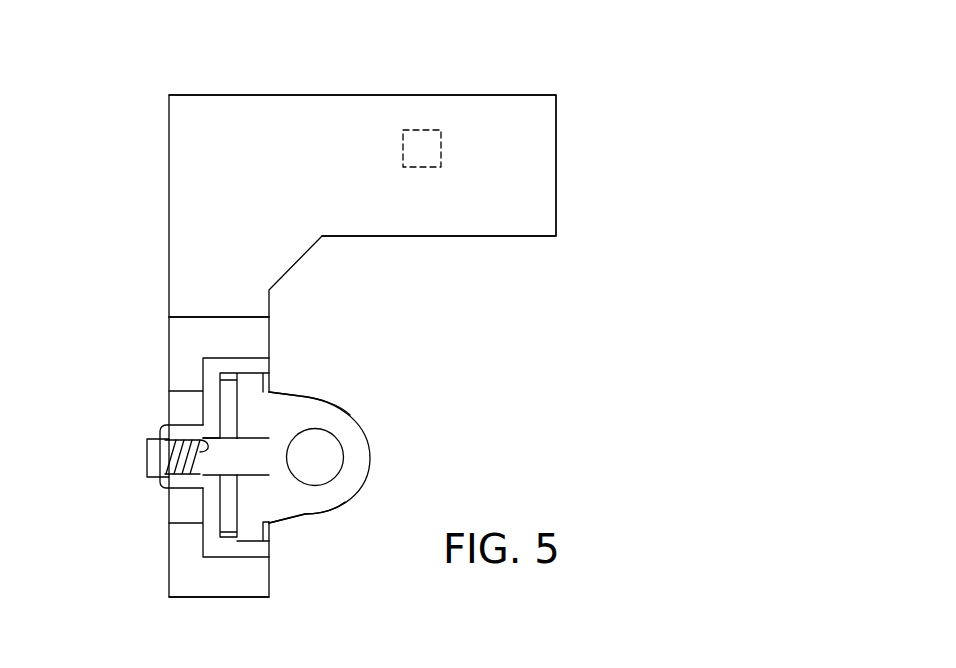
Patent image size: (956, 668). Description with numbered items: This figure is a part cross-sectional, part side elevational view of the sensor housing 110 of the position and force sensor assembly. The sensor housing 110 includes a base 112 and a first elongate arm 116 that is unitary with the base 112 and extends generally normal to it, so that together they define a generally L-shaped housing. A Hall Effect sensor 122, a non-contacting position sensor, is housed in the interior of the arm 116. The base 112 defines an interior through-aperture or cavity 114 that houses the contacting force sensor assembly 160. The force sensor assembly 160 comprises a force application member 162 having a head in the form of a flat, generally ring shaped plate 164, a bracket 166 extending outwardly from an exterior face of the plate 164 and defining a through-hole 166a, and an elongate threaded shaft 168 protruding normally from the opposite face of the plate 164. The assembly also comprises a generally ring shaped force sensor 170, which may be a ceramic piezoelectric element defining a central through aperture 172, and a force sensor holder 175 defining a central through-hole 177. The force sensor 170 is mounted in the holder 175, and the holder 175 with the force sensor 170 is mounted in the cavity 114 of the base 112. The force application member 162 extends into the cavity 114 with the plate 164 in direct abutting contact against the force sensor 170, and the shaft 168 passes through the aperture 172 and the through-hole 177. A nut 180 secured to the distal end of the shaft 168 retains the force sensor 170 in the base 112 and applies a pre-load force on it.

The sensor housing 110 is at (164, 156).
The base 112 is at (183, 552).
The interior through-aperture 114 is at (187, 402).
The first elongate arm 116 is at (367, 148).
The Hall Effect sensor 122 is at (432, 147).
The force sensor assembly 160 is at (315, 495).
The force application member 162 is at (307, 397).
The plate 164 is at (252, 528).
The bracket 166 is at (352, 468).
The through-hole 166a is at (318, 447).
The threaded shaft 168 is at (205, 458).
The force sensor 170 is at (228, 503).
The central through aperture 172 is at (237, 470).
The force sensor holder 175 is at (212, 518).
The central through-hole 177 is at (160, 437).
The nut 180 is at (160, 483).